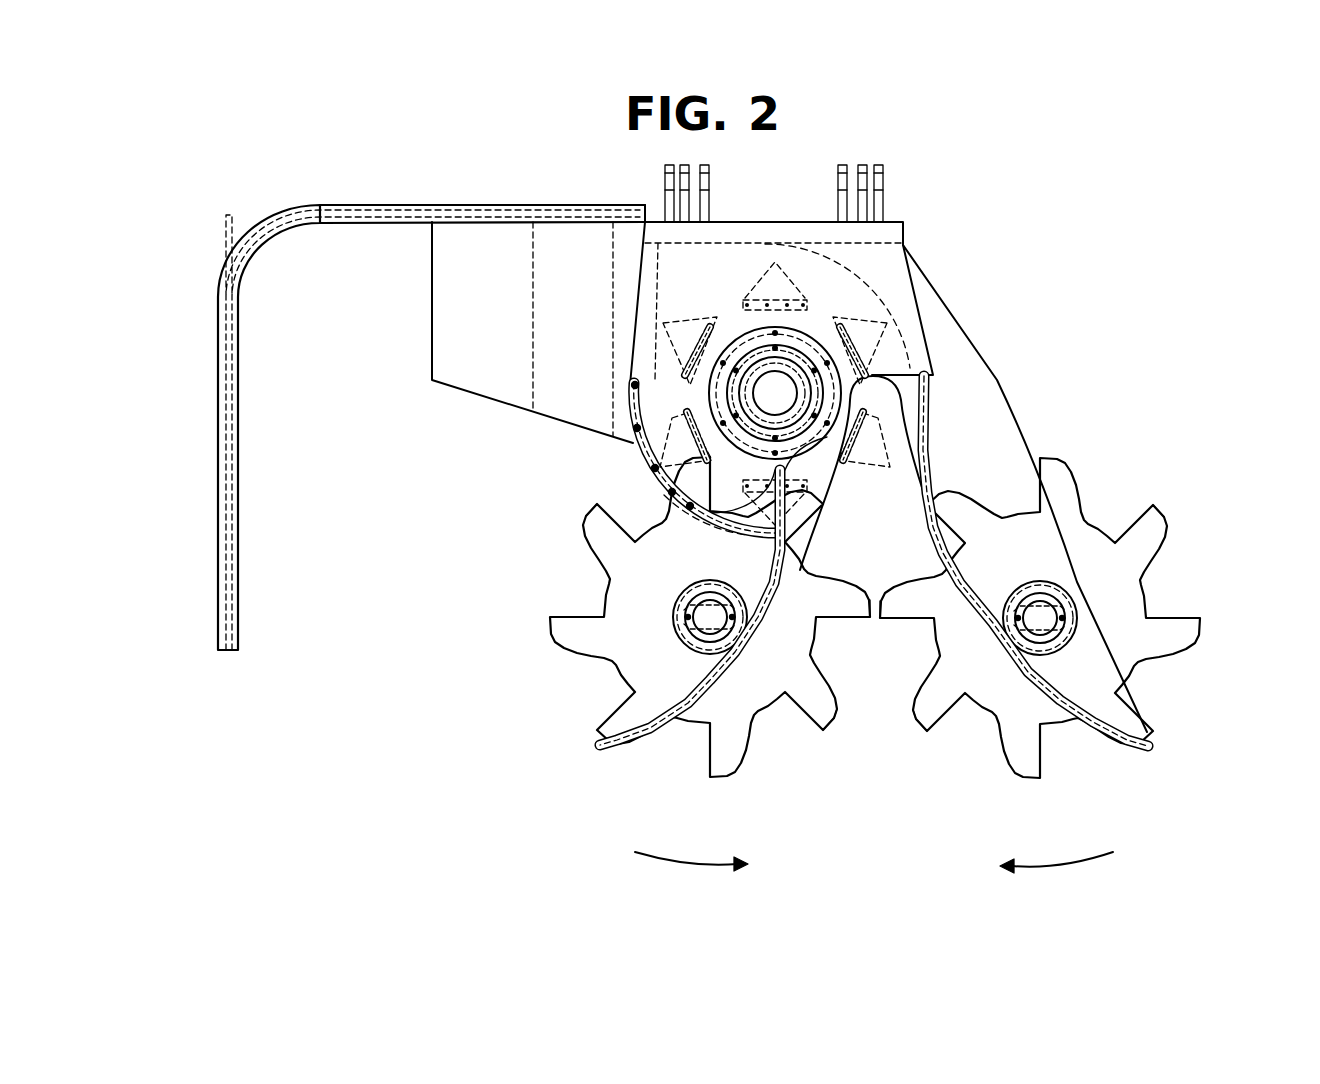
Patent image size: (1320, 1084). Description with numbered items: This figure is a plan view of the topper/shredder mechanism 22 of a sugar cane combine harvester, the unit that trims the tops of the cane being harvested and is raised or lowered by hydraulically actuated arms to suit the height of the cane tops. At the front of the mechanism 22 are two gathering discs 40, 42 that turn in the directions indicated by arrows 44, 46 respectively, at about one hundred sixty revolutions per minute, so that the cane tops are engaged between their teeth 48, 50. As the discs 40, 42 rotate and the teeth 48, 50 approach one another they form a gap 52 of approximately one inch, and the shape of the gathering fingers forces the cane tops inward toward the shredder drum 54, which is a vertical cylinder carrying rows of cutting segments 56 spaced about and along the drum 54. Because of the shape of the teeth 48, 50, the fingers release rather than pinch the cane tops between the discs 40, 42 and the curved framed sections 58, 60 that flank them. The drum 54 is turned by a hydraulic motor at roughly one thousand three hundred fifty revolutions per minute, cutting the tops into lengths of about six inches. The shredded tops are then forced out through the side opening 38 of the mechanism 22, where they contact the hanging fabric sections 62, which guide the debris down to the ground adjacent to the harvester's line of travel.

The topper/shredder mechanism 22 is at (1062, 375).
The side opening 38 is at (633, 303).
The gathering disc 40 is at (728, 737).
The gathering disc 42 is at (1022, 737).
The arrow 44 is at (680, 870).
The arrow 46 is at (1065, 868).
The teeth 48 is at (850, 672).
The teeth 50 is at (938, 710).
The gap 52 is at (876, 588).
The shredder drum 54 is at (817, 313).
The cutting segments 56 is at (762, 280).
The curved framed section 58 is at (620, 748).
The curved framed section 60 is at (1132, 750).
The hanging fabric sections 62 is at (238, 560).